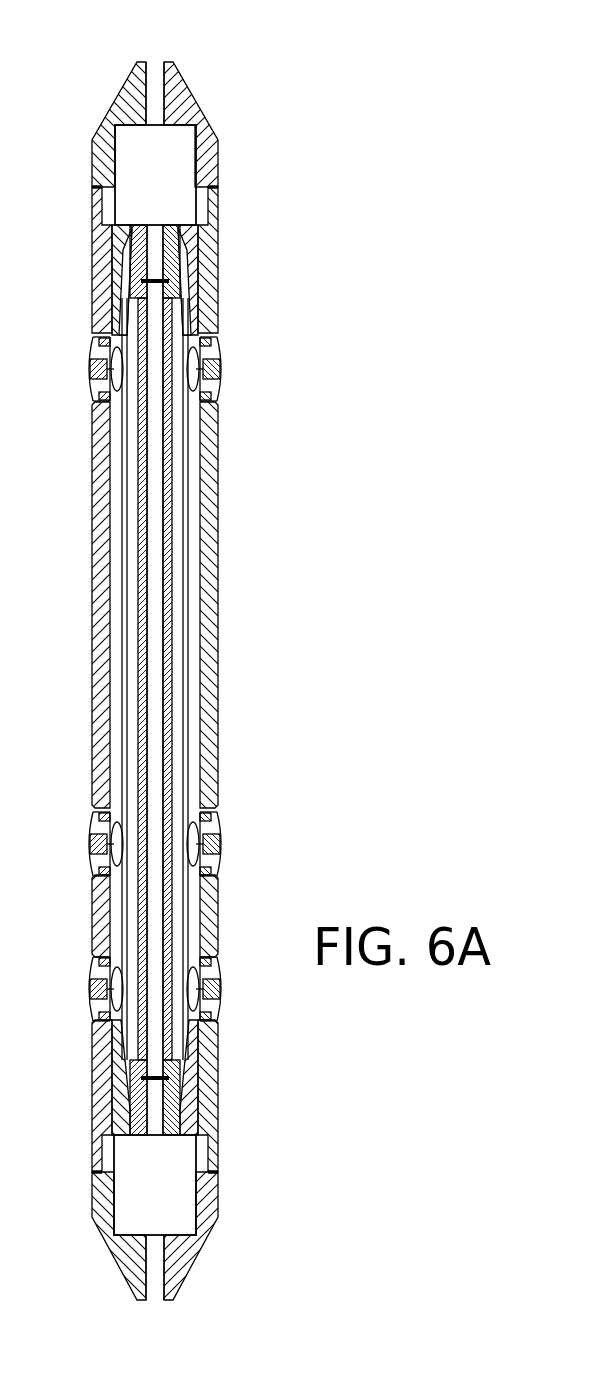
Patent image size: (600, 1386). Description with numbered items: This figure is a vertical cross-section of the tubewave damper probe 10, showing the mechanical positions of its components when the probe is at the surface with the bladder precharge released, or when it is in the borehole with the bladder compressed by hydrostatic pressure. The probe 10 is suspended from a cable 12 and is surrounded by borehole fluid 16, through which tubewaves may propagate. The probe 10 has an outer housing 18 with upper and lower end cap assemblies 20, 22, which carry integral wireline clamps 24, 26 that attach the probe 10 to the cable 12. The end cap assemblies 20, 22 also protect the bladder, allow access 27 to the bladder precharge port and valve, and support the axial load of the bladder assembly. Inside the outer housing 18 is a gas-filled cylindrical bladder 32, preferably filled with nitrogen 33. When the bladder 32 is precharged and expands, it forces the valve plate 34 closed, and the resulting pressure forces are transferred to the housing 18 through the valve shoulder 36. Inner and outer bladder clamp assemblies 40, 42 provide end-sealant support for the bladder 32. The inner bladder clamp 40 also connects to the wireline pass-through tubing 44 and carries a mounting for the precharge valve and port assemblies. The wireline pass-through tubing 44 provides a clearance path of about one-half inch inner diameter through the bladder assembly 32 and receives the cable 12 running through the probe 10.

The tubewave damper probe 10 is at (73, 612).
The cable 12 is at (153, 452).
The borehole fluid 16 is at (192, 537).
The outer housing 18 is at (218, 252).
The upper end cap assembly 20 is at (213, 130).
The lower end cap assembly 22 is at (203, 1202).
The wireline clamp 24 is at (158, 70).
The wireline clamp 26 is at (153, 1255).
The access 27 is at (141, 192).
The bladder 32 is at (183, 457).
The nitrogen 33 is at (175, 502).
The valve plate 34 is at (190, 837).
The valve shoulder 36 is at (208, 338).
The inner bladder clamp assembly 40 is at (180, 1092).
The outer bladder clamp assembly 42 is at (110, 247).
The wireline pass-through tubing 44 is at (140, 325).